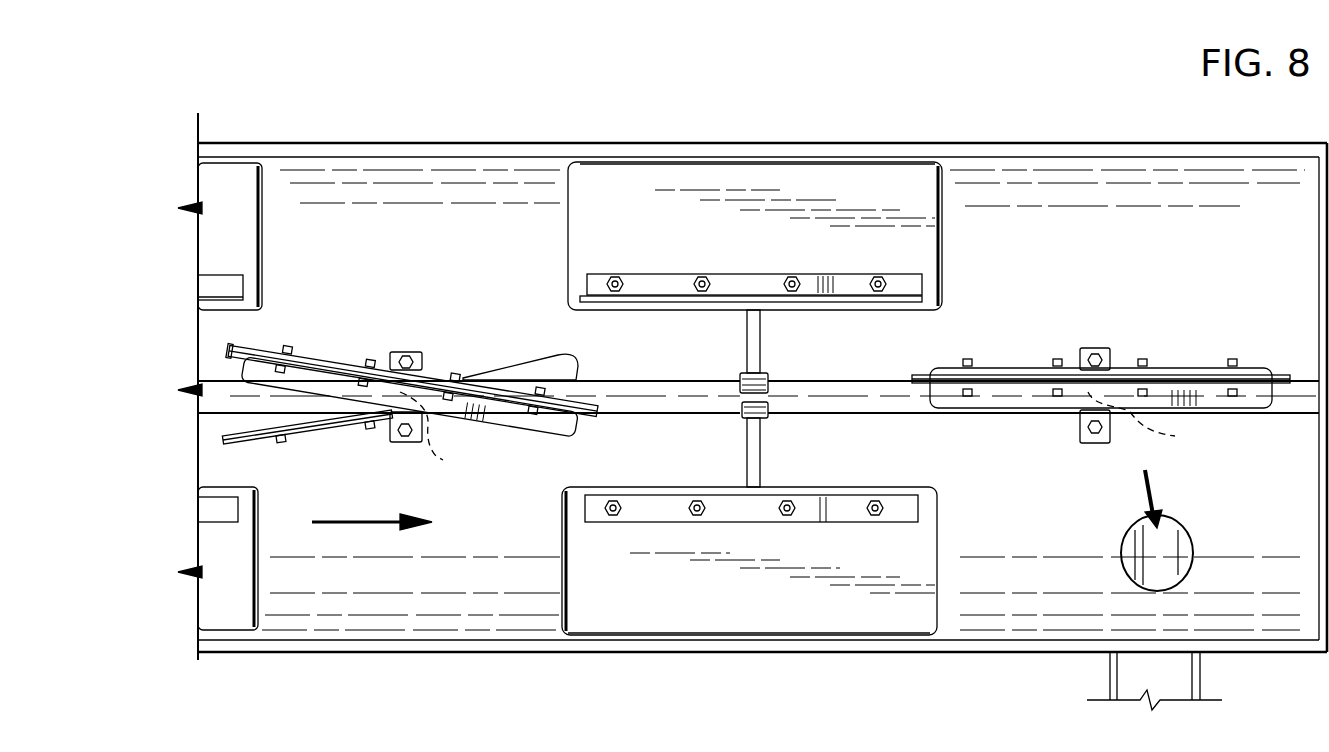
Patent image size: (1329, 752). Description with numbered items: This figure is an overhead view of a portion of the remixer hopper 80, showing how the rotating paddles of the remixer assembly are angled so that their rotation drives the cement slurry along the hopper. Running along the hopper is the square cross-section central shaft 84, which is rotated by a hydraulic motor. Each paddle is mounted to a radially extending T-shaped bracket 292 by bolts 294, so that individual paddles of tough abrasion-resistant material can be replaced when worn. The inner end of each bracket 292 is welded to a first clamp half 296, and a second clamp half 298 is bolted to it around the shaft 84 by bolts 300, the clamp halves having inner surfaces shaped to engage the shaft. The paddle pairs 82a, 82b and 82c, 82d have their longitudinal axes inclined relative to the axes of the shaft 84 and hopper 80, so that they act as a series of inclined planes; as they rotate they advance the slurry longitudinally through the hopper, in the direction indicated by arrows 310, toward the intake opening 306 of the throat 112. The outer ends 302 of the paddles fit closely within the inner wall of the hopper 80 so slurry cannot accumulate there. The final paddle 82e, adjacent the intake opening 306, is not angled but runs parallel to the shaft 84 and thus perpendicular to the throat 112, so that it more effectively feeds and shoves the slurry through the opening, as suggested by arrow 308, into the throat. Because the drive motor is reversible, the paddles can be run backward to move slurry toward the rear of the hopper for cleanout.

The remixer hopper 80 is at (1030, 145).
The paddle 82a is at (232, 440).
The paddle 82b is at (231, 348).
The paddle 82c is at (813, 178).
The paddle 82d is at (693, 620).
The paddle 82e is at (1250, 370).
The central shaft 84 is at (657, 385).
The throat 112 is at (1185, 677).
The bracket 292 is at (757, 325).
The mounting bolts 294 is at (792, 283).
The first clamp half 296 is at (768, 418).
The second clamp half 298 is at (395, 352).
The bolts 300 is at (404, 355).
The outer ends of the paddles 302 is at (693, 162).
The intake opening 306 is at (1178, 543).
The discharge direction arrow 308 is at (1150, 492).
The arrows 310 is at (352, 520).